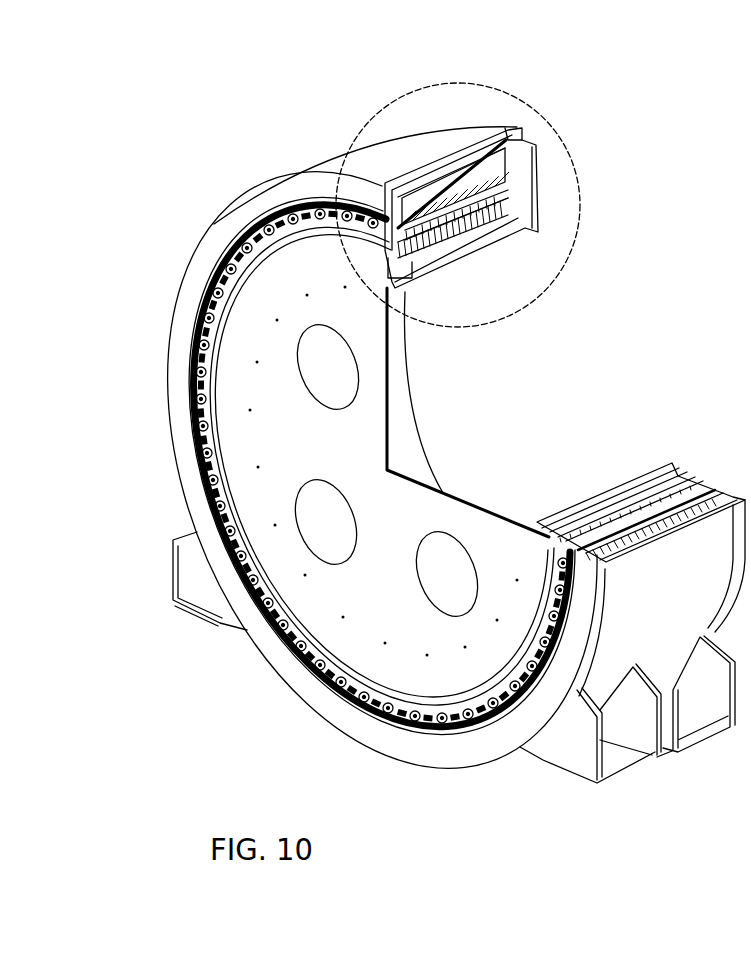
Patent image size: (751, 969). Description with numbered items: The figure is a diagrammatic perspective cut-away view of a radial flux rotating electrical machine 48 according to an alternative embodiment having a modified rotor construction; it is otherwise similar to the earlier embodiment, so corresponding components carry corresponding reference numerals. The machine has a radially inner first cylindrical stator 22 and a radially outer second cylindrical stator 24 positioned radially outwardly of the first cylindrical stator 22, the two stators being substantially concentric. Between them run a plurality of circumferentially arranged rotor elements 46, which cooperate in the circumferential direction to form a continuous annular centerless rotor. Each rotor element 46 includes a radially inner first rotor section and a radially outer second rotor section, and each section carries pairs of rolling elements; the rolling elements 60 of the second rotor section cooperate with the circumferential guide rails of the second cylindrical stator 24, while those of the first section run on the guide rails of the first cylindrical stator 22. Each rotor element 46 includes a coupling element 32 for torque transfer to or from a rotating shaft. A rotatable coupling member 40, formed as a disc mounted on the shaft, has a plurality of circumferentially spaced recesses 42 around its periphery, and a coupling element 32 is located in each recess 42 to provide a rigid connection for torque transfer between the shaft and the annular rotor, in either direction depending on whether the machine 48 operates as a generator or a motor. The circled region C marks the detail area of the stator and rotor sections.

The first cylindrical stator 22 is at (464, 258).
The second cylindrical stator 24 is at (430, 180).
The coupling element 32 is at (185, 380).
The rotatable coupling member 40 is at (470, 530).
The recesses 42 is at (430, 722).
The rotor element 46 is at (504, 138).
The rotating electrical machine 48 is at (657, 266).
The rolling elements 60 is at (262, 222).
The detail circle C is at (572, 152).